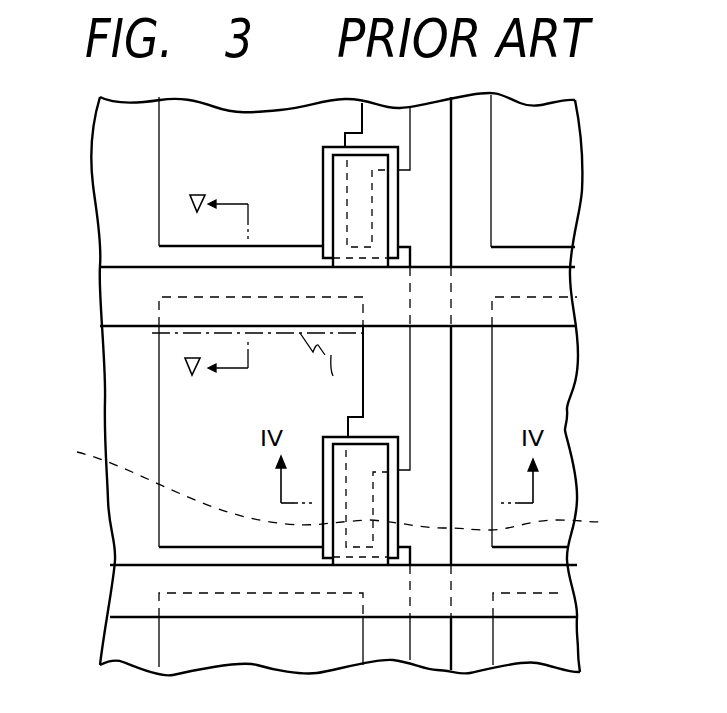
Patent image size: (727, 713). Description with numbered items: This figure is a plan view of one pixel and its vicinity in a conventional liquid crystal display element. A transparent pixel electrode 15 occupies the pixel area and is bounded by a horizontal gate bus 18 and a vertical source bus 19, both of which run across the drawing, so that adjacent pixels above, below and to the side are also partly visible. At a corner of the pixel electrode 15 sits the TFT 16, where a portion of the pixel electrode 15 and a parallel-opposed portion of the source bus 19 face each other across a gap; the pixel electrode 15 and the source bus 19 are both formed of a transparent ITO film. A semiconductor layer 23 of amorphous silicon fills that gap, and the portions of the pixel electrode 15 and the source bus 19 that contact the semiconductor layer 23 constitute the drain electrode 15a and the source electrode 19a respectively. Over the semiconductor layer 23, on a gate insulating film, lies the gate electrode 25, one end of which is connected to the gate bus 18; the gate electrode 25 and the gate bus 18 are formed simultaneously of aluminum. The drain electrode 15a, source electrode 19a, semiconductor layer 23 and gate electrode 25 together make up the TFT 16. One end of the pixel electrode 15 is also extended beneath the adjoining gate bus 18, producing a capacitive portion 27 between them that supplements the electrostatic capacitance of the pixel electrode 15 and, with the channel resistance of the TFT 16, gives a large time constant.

The pixel electrode 15 is at (172, 527).
The drain electrode 15a is at (200, 481).
The TFT 16 is at (403, 449).
The gate bus 18 is at (550, 280).
The source bus 19 is at (438, 355).
The source electrode 19a is at (506, 522).
The semiconductor layer 23 is at (380, 437).
The gate electrode 25 is at (397, 533).
The capacitive portion 27 is at (165, 313).